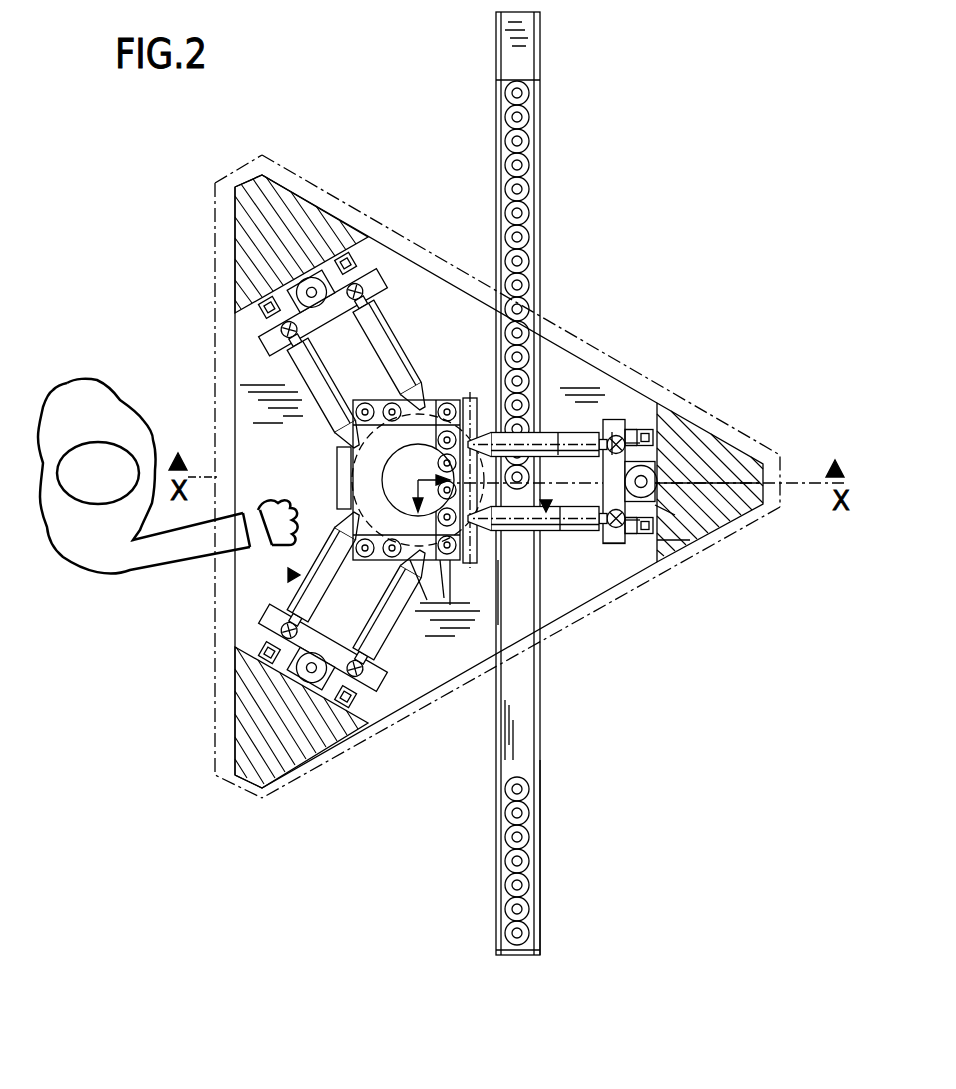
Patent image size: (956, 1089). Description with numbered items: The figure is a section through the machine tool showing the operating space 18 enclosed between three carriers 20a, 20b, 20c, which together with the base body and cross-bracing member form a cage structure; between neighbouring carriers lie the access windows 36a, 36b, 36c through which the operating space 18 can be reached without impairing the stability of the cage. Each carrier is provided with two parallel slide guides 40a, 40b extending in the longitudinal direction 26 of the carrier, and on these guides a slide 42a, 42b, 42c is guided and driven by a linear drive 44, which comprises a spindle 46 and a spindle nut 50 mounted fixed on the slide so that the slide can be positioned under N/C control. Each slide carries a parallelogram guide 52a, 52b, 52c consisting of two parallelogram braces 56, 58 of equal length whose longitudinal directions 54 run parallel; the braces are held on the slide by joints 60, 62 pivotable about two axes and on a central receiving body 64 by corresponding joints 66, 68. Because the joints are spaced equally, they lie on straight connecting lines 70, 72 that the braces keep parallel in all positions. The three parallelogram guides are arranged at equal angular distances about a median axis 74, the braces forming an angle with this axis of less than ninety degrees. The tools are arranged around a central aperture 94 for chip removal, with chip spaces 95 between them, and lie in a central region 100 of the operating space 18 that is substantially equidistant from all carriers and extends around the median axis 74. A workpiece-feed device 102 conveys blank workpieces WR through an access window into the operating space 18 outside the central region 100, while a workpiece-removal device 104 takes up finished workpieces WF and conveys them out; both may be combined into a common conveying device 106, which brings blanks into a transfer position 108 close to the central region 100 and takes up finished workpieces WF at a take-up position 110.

The operating space 18 is at (427, 612).
The carrier 20a is at (750, 503).
The carrier 20b is at (295, 215).
The carrier 20c is at (303, 743).
The longitudinal direction 26 is at (727, 510).
The access window 36a is at (550, 335).
The access window 36b is at (231, 360).
The access window 36c is at (598, 598).
The slide guide 40a is at (665, 512).
The slide guide 40b is at (665, 455).
The slide 42a is at (627, 423).
The slide 42b is at (333, 308).
The slide 42c is at (380, 690).
The linear drive 44 is at (697, 520).
The spindle 46 is at (745, 468).
The spindle nut 50 is at (660, 475).
The parallelogram guide 52a is at (567, 535).
The parallelogram guide 52b is at (392, 313).
The parallelogram guide 52c is at (300, 612).
The longitudinal direction 54 is at (610, 423).
The parallelogram brace 56 is at (558, 428).
The parallelogram brace 58 is at (560, 553).
The joint 60 is at (662, 440).
The joint 62 is at (628, 512).
The receiving body 64 is at (455, 392).
The joint 66 is at (468, 398).
The joint 68 is at (444, 598).
The straight connecting line 70 is at (657, 520).
The straight connecting line 72 is at (450, 605).
The median axis 74 is at (337, 437).
The aperture 94 is at (289, 575).
The chip space 95 is at (410, 375).
The central region 100 is at (345, 437).
The workpiece-feed device 102 is at (540, 169).
The workpiece-removal device 104 is at (540, 778).
The common conveying device 106 is at (543, 896).
The transfer position 108 is at (597, 495).
The take-up position 110 is at (498, 625).
The blank workpiece WR is at (540, 198).
The finished workpiece WF is at (540, 865).